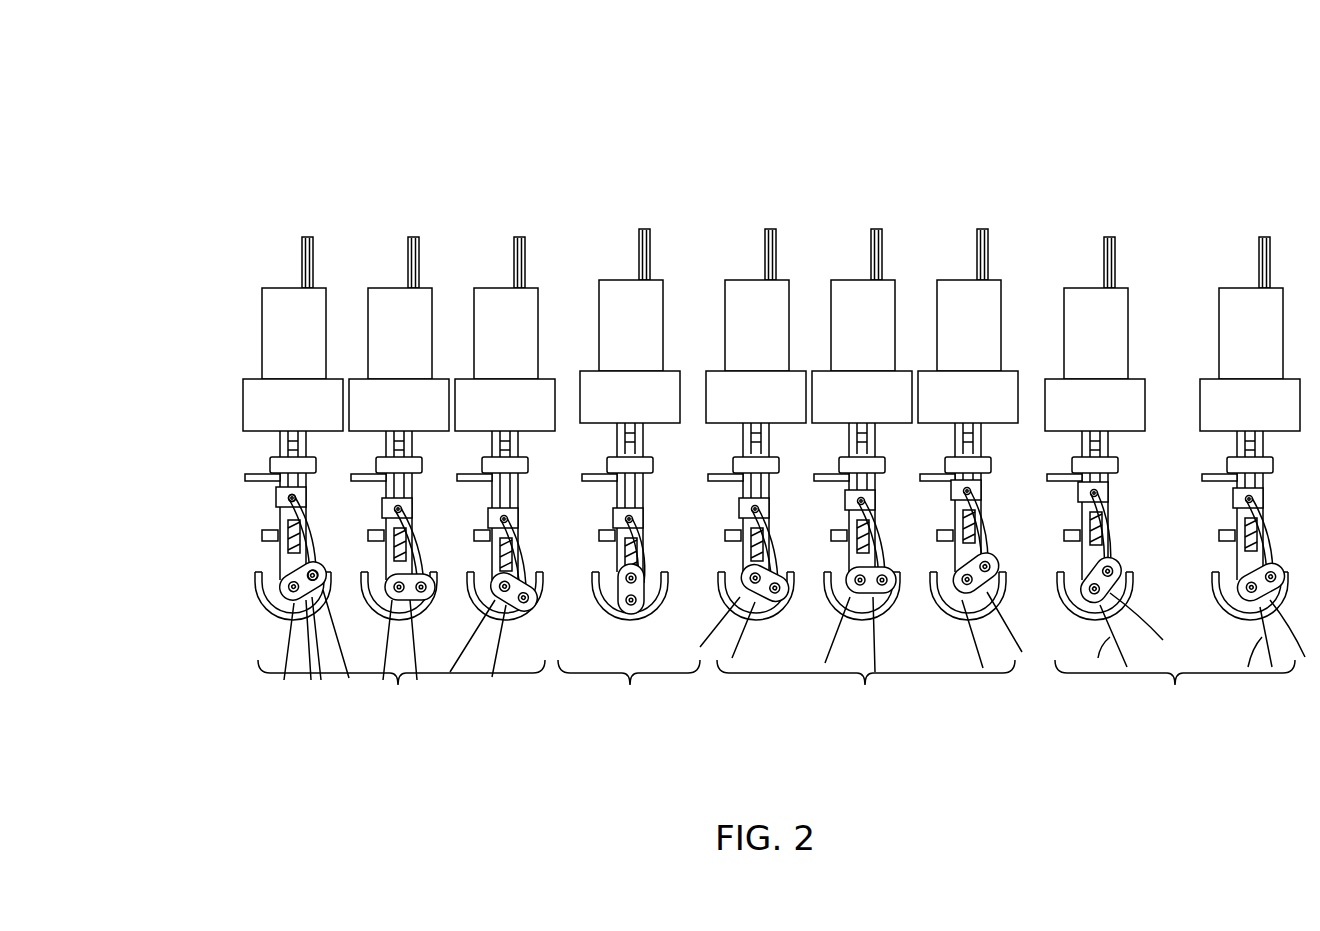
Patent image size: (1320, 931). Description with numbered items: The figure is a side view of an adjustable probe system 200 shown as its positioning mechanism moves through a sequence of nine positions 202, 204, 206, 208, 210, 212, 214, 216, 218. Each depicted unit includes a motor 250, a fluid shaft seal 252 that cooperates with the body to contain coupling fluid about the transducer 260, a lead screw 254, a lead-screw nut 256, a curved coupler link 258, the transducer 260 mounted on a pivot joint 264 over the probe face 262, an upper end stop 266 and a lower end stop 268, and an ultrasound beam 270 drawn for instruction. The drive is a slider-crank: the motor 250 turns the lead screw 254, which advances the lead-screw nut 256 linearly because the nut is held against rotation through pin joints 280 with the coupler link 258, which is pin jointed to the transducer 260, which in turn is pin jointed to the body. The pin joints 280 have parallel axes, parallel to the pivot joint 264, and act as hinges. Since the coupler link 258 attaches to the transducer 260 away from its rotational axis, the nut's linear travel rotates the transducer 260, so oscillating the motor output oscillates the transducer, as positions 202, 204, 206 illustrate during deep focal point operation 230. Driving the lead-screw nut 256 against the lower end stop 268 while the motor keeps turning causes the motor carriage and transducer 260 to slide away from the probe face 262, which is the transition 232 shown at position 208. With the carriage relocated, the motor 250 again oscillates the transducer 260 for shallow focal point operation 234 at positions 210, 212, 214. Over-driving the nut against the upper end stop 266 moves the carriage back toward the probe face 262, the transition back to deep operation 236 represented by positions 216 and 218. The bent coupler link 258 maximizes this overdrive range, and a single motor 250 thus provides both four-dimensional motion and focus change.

The adjustable probe system 200 is at (272, 110).
The position 202 is at (307, 221).
The position 204 is at (413, 221).
The position 206 is at (519, 221).
The position 208 is at (643, 212).
The position 210 is at (769, 212).
The position 212 is at (875, 212).
The position 214 is at (981, 212).
The position 216 is at (1109, 221).
The position 218 is at (1264, 221).
The deep focal point operation 230 is at (401, 716).
The transition from deep operation to shallow operation 232 is at (628, 702).
The shallow focal point operation 234 is at (866, 716).
The transition back to deep operation 236 is at (1175, 702).
The motor 250 is at (263, 337).
The fluid shaft seal 252 is at (270, 463).
The lead screw 254 is at (262, 537).
The lead-screw nut 256 is at (275, 500).
The coupler link 258 is at (305, 527).
The transducer 260 is at (280, 613).
The probe face 262 is at (286, 620).
The pivot joint 264 is at (280, 588).
The upper end stop 266 is at (245, 477).
The lower end stop 268 is at (285, 530).
The ultrasound beam 270 is at (303, 650).
The pin joints 280 is at (295, 498).